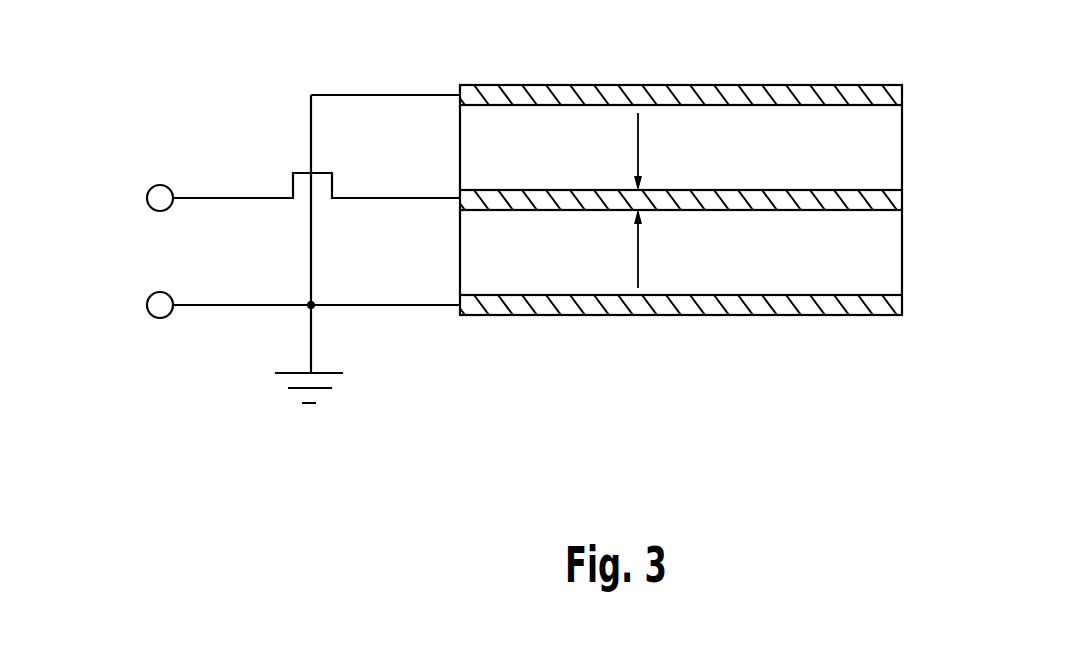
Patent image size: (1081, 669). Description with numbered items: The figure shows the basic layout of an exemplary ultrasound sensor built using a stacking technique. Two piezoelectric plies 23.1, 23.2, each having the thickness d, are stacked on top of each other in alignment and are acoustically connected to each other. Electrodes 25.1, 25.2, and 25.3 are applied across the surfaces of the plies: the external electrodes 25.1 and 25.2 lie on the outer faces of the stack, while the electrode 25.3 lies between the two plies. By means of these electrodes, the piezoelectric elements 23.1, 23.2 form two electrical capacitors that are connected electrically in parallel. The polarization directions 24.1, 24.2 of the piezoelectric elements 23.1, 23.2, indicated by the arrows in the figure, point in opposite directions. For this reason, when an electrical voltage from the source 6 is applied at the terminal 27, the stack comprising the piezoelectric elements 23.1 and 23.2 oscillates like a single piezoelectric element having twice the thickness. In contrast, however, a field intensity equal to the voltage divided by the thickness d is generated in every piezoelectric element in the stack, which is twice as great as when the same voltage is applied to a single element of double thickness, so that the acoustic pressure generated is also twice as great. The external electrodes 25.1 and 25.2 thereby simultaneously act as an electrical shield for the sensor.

The voltage source / control unit 6 is at (253, 305).
The terminal 27 is at (147, 193).
The external electrode 25.1 is at (902, 93).
The external electrode 25.2 is at (902, 305).
The electrode 25.3 is at (902, 200).
The piezoelectric ply 23.1 is at (885, 148).
The piezoelectric ply 23.2 is at (885, 264).
The polarization direction 24.1 is at (638, 139).
The polarization direction 24.2 is at (638, 260).